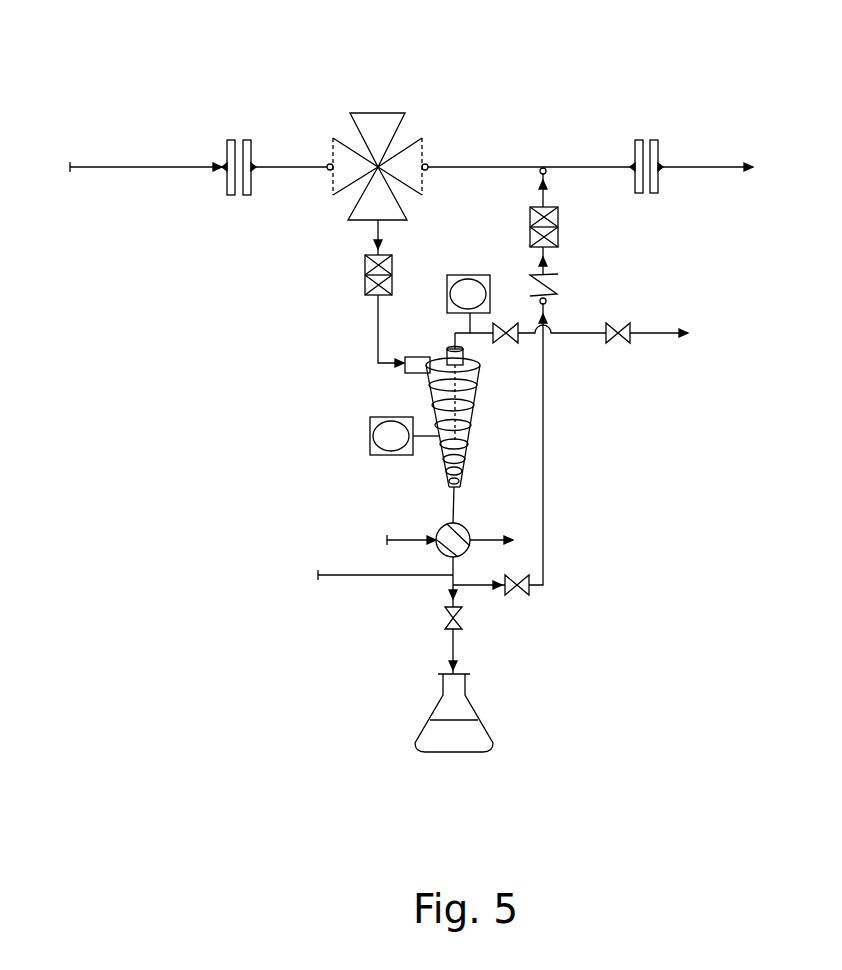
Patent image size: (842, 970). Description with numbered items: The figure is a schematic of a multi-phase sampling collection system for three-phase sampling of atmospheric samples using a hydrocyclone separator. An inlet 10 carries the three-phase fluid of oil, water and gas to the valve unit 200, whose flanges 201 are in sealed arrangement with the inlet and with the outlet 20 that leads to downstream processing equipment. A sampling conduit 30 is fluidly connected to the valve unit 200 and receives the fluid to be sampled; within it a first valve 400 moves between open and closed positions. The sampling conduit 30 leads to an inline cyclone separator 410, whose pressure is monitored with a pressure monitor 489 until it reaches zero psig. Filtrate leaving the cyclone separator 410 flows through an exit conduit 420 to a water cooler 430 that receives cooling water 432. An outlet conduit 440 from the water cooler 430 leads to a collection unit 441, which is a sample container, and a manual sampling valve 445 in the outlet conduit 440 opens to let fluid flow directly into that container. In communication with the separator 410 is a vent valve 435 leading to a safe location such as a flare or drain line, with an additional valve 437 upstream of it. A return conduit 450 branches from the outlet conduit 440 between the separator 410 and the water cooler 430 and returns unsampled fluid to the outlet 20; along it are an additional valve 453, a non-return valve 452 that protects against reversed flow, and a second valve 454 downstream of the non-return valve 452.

The inlet 10 is at (122, 165).
The outlet 20 is at (700, 167).
The flange 201 is at (246, 113).
The valve unit 200 is at (387, 87).
The first valve 400 is at (365, 280).
The sampling conduit 30 is at (378, 325).
The pressure monitor 489 is at (468, 275).
The cyclone separator 410 is at (427, 380).
The exit conduit 420 is at (453, 500).
The water cooler 430 is at (462, 525).
The cooling water 432 is at (428, 542).
The outlet conduit 440 is at (361, 577).
The manual sampling valve 445 is at (445, 612).
The collection unit 441 is at (493, 740).
The additional valve (V2) 453 is at (517, 597).
The return conduit 450 is at (543, 520).
The additional valve (V1) 437 is at (507, 345).
The vent valve 435 is at (614, 345).
The non-return valve 452 is at (548, 288).
The second valve 454 is at (558, 222).